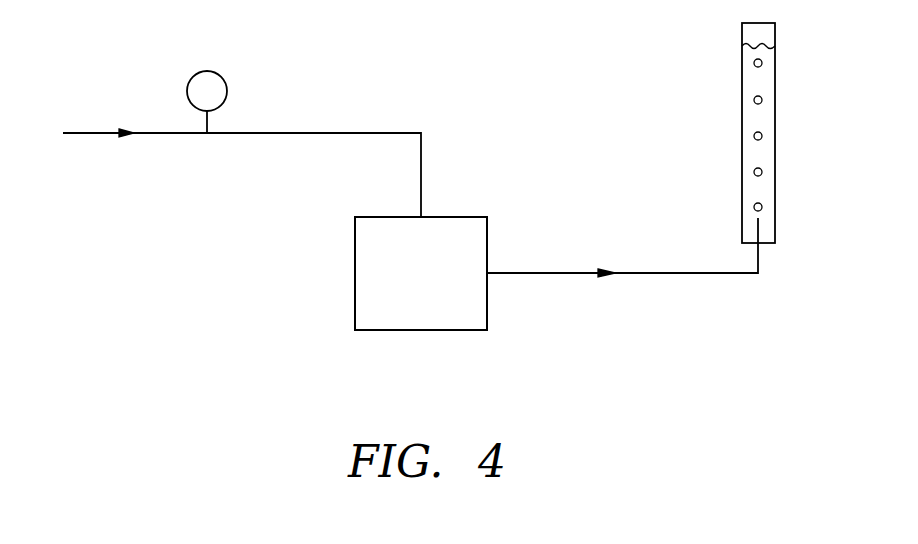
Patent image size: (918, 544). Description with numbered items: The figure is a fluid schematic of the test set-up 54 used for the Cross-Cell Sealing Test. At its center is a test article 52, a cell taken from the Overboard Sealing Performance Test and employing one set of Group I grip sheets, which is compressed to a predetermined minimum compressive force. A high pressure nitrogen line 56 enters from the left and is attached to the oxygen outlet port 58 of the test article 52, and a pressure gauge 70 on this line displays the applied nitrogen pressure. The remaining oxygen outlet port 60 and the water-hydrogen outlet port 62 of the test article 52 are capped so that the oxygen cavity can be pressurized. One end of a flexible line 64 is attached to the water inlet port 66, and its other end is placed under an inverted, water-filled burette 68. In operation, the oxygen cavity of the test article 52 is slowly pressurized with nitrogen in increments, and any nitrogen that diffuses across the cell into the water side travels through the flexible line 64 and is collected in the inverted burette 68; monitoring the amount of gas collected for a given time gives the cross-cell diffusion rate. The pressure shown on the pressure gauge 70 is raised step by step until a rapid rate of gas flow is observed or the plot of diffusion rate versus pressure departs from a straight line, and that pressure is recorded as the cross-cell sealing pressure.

The test article 52 is at (444, 297).
The test set-up 54 is at (276, 307).
The high pressure nitrogen line 56 is at (306, 133).
The oxygen outlet port 58 is at (424, 216).
The oxygen outlet port 60 is at (417, 330).
The water-hydrogen outlet port 62 is at (355, 272).
The flexible line 64 is at (685, 273).
The water inlet port 66 is at (490, 272).
The inverted water-filled burette 68 is at (775, 137).
The pressure gauge 70 is at (200, 72).